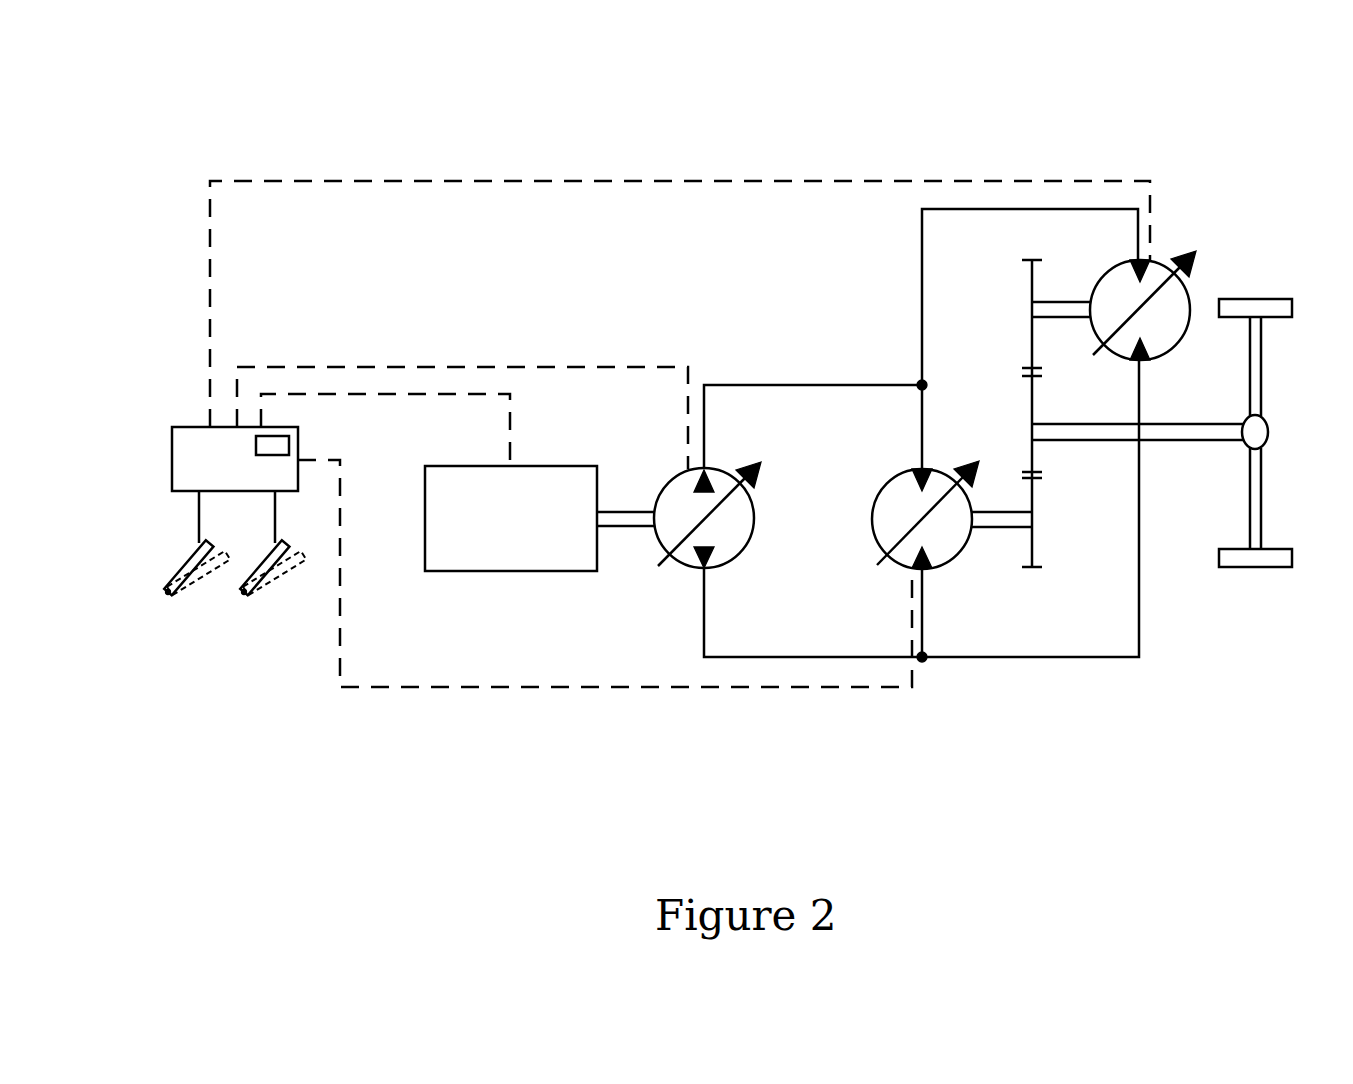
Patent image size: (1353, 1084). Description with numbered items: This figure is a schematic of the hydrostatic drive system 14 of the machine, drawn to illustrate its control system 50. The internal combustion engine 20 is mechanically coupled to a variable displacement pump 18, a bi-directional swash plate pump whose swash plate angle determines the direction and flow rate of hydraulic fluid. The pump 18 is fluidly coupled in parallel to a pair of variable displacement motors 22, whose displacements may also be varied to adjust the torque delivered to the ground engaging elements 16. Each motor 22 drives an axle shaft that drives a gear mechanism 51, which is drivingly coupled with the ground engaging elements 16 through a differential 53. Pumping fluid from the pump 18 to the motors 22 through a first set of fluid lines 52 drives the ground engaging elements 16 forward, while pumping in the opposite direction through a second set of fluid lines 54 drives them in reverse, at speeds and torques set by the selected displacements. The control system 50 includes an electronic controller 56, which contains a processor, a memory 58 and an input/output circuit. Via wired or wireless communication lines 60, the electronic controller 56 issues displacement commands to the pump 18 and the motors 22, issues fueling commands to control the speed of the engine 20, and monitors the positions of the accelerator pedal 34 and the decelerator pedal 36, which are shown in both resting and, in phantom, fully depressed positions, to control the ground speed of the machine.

The hydrostatic drive system 14 is at (677, 716).
The ground engaging elements 16 is at (1256, 299).
The variable displacement pump 18 is at (750, 548).
The internal combustion engine 20 is at (512, 571).
The variable displacement motors 22 is at (885, 482).
The accelerator pedal 34 is at (180, 576).
The decelerator pedal 36 is at (256, 576).
The control system 50 is at (737, 124).
The gear mechanism 51 is at (989, 384).
The first set of fluid lines 52 is at (816, 385).
The differential 53 is at (1269, 430).
The second set of fluid lines 54 is at (1025, 657).
The electronic controller 56 is at (190, 427).
The memory 58 is at (289, 436).
The communication lines 60 is at (510, 181).